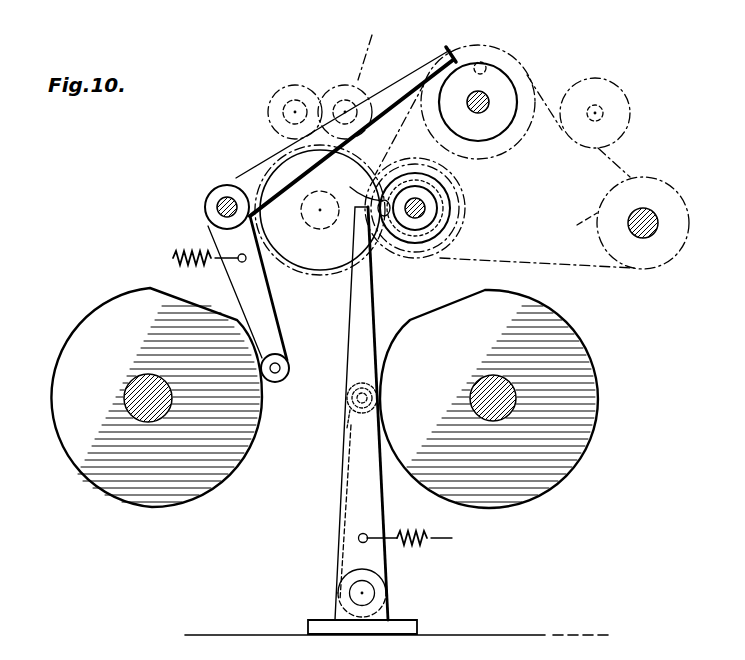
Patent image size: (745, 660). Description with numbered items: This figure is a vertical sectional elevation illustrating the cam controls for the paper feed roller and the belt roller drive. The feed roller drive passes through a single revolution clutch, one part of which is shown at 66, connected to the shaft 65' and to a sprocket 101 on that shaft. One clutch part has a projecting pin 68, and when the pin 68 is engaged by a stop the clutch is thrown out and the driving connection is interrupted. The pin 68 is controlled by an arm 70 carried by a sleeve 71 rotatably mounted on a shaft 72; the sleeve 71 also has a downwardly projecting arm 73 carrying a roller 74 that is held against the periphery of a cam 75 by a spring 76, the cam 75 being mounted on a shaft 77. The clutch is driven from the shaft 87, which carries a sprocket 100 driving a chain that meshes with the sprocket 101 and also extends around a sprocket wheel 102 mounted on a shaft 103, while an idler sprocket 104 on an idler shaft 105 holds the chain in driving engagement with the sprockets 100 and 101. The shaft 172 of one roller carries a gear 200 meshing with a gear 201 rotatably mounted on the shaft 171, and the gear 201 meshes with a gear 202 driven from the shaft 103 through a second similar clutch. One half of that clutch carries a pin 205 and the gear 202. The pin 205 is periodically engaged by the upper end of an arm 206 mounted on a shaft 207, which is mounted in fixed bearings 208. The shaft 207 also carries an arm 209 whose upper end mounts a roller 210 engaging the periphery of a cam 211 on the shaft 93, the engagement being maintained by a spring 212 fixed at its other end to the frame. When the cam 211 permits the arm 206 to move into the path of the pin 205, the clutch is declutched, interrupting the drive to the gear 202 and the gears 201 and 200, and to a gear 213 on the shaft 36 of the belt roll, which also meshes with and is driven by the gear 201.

The shaft 36 is at (296, 100).
The shaft 65' is at (522, 87).
The clutch part 66 is at (497, 118).
The pin 68 is at (487, 62).
The arm 70 is at (393, 82).
The sleeve 71 is at (206, 200).
The shaft 72 is at (226, 200).
The arm 73 is at (267, 317).
The roller 74 is at (289, 366).
The cam 75 is at (253, 418).
The spring 76 is at (172, 258).
The shaft 77 is at (128, 390).
The shaft 87 is at (643, 238).
The shaft 93 is at (478, 386).
The sprocket 100 is at (537, 240).
The sprocket 101 is at (503, 153).
The sprocket wheel 102 is at (463, 222).
The shaft 103 is at (421, 206).
The idler sprocket 104 is at (630, 120).
The idler shaft 105 is at (604, 108).
The shaft 171 is at (306, 220).
The shaft 172 is at (344, 100).
The gear 200 is at (371, 45).
The gear 201 is at (325, 272).
The gear 202 is at (456, 240).
The pin 205 is at (381, 202).
The arm 206 is at (371, 325).
The shaft 207 is at (352, 595).
The fixed bearings 208 is at (389, 616).
The arm 209 is at (345, 465).
The roller 210 is at (350, 415).
The cam 211 is at (579, 443).
The spring 212 is at (452, 538).
The gear 213 is at (266, 111).